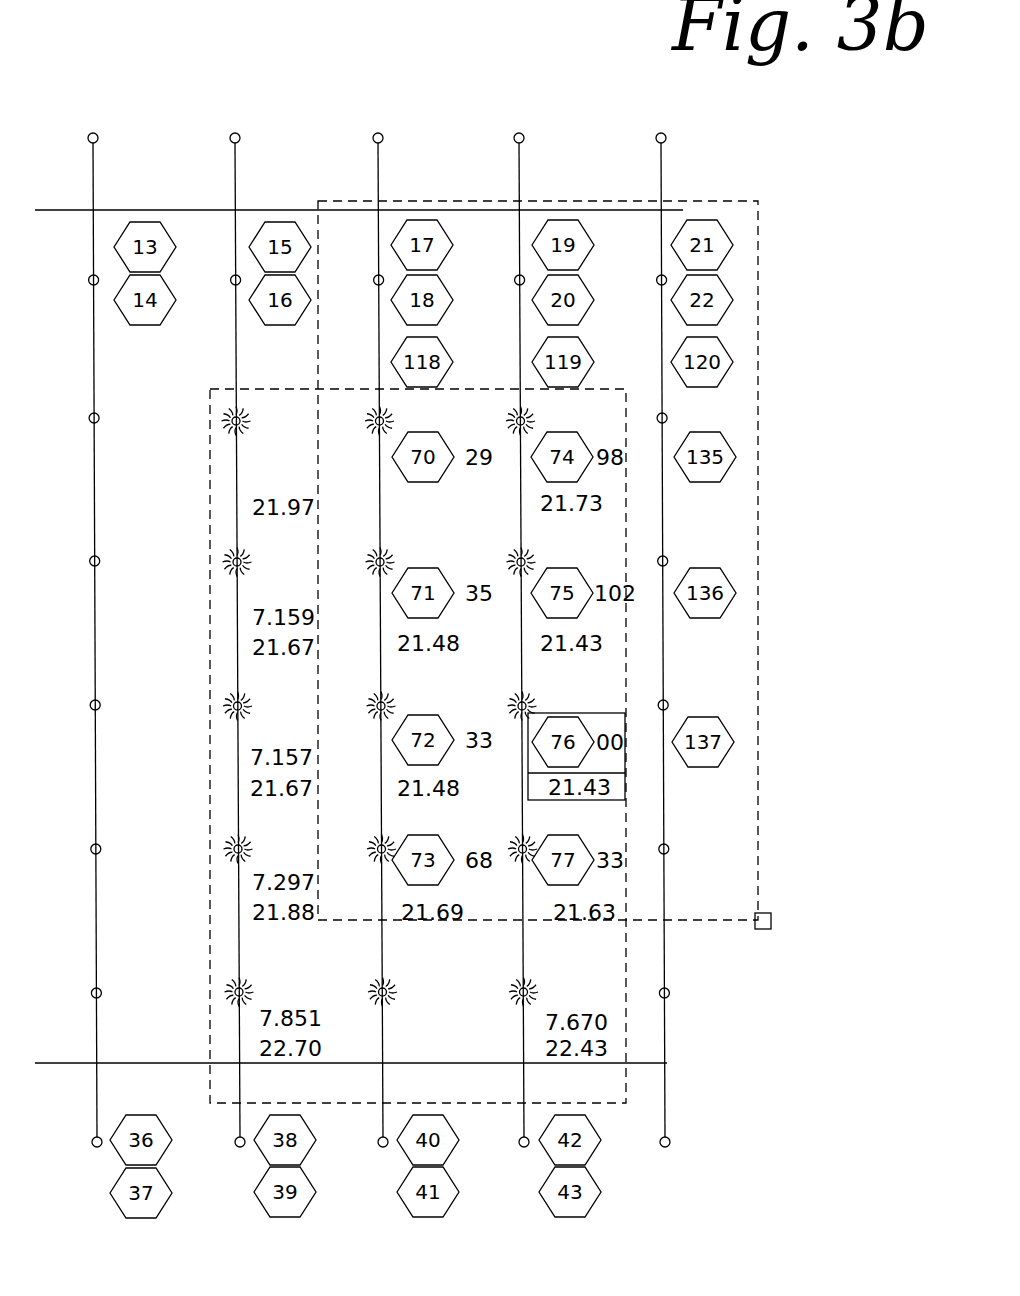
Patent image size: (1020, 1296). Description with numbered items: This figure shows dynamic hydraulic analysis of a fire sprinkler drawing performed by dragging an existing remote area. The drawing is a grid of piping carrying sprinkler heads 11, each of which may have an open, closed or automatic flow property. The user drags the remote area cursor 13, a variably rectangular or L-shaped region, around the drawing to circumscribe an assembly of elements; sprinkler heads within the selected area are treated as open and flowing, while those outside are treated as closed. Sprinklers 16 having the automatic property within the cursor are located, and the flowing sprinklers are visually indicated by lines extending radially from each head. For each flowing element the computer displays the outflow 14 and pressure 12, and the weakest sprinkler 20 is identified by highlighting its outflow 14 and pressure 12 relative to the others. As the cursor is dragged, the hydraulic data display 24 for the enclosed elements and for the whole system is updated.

The sprinkler head 11 is at (99, 710).
The pressure 12 is at (317, 462).
The remote area cursor 13 is at (758, 347).
The outflow 14 is at (458, 506).
The automatic property sprinkler 16 is at (530, 558).
The weakest sprinkler 20 is at (432, 715).
The hydraulic data display 24 is at (467, 1048).